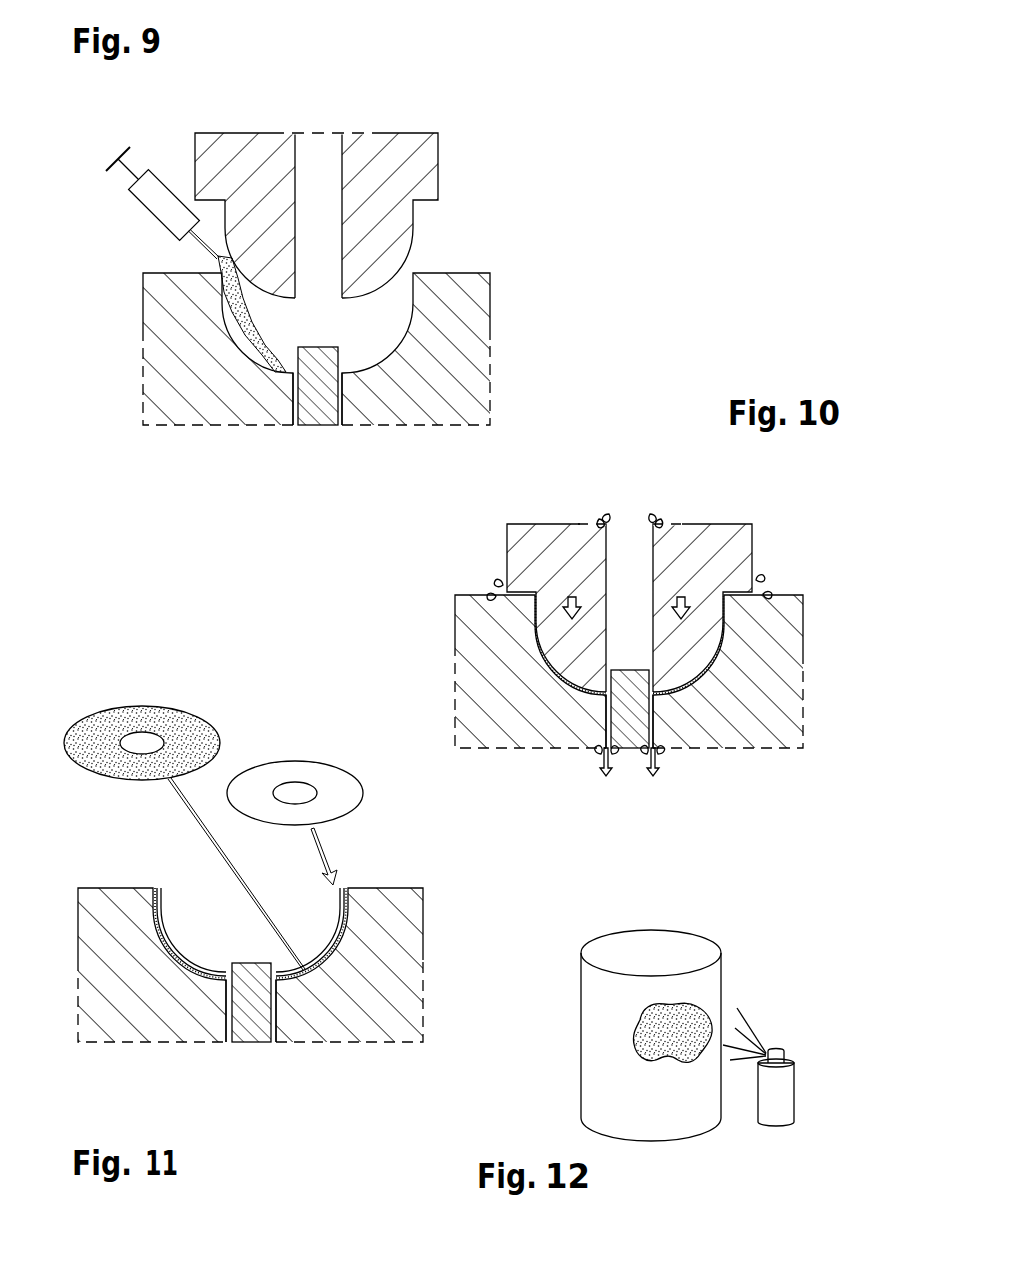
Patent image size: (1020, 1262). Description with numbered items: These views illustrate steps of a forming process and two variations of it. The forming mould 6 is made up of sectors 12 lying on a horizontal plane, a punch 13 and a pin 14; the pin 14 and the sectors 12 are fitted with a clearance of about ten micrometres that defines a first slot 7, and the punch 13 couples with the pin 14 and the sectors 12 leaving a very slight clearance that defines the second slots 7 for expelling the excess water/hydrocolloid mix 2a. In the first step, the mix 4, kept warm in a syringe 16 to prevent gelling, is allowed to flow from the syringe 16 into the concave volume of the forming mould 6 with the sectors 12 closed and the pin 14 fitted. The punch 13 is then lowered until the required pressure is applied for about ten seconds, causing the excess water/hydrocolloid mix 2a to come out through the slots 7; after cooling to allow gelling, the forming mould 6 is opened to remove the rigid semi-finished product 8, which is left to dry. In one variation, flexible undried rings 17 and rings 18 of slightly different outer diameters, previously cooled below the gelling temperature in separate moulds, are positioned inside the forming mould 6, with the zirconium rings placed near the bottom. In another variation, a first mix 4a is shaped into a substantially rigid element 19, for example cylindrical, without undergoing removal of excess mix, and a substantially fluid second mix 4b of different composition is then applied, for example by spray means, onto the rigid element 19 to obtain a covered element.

In FIG. 9, the punch 13 is at (390, 158).
In FIG. 10, the punch 13 is at (555, 562).
In FIG. 9, the sectors 12 is at (448, 323).
In FIG. 10, the sectors 12 is at (462, 712).
In FIG. 11, the sectors 12 is at (105, 990).
In FIG. 9, the pin 14 is at (322, 402).
In FIG. 10, the pin 14 is at (627, 736).
In FIG. 11, the pin 14 is at (252, 1013).
In FIG. 9, the slots 7 is at (292, 395).
In FIG. 10, the slots 7 is at (729, 592).
In FIG. 11, the slots 7 is at (234, 1002).
In FIG. 9, the mix 4 is at (233, 306).
In FIG. 9, the syringe 16 is at (156, 197).
In FIG. 9, the forming mould 6 is at (485, 272).
In FIG. 10, the forming mould 6 is at (782, 595).
In FIG. 11, the forming mould 6 is at (113, 888).
In FIG. 10, the rigid semi-finished product 8 is at (552, 678).
In FIG. 10, the water/hydrocolloid mix 2a is at (655, 510).
In FIG. 11, the rings 17 is at (112, 725).
In FIG. 11, the rings 18 is at (288, 776).
In FIG. 12, the substantially rigid element 19 is at (622, 953).
In FIG. 12, the first mix 4a is at (626, 1101).
In FIG. 12, the second mix 4b is at (682, 1047).